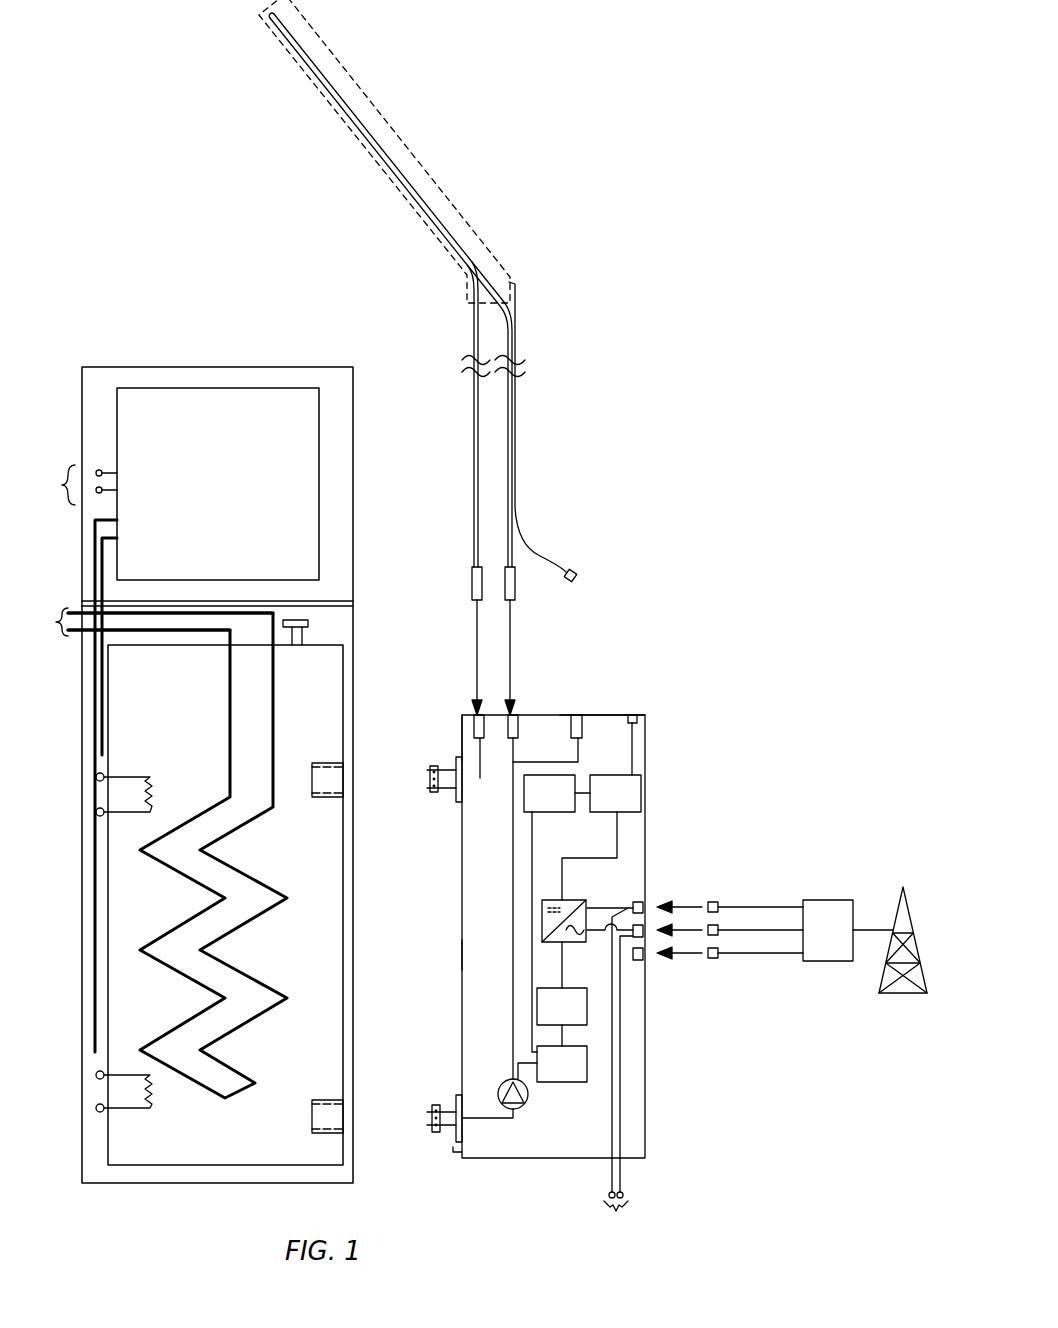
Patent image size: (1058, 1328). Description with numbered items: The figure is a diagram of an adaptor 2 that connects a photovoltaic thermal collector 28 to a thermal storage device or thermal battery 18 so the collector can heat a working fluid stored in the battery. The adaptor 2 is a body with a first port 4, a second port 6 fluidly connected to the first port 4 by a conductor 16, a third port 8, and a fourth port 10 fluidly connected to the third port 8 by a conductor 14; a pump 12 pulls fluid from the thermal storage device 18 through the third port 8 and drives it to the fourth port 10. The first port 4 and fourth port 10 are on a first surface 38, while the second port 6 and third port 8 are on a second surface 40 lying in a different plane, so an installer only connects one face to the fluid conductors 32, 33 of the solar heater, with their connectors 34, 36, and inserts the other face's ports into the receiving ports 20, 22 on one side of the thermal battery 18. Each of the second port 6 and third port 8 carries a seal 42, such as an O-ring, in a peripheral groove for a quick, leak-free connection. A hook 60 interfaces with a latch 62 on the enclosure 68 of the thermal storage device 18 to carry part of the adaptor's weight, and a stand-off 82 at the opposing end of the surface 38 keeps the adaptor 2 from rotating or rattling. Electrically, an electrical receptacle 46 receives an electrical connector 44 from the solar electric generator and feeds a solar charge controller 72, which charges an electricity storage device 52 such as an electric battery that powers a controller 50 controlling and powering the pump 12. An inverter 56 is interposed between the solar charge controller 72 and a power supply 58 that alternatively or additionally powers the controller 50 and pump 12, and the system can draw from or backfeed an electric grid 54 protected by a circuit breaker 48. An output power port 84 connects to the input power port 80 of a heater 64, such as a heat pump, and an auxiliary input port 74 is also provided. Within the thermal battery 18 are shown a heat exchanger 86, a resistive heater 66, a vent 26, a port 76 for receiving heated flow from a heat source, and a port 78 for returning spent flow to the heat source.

The adaptor 2 is at (645, 1120).
The first port 4 is at (468, 669).
The second port 6 is at (427, 780).
The third port 8 is at (427, 1118).
The fourth port 10 is at (515, 714).
The pump 12 is at (528, 1094).
The conductor 14 is at (508, 988).
The conductor 16 is at (473, 780).
The thermal storage device 18 is at (107, 933).
The port 20 is at (330, 1100).
The port 22 is at (330, 763).
The vent 26 is at (308, 621).
The photovoltaic thermal collector 28 is at (327, 46).
The conductor 32 is at (511, 418).
The conductor 33 is at (475, 418).
The connector 34 is at (514, 580).
The connector 36 is at (473, 580).
The first surface 38 is at (462, 951).
The second surface 40 is at (643, 714).
The seal 42 is at (456, 762).
The electrical connector 44 is at (576, 578).
The electrical receptacle 46 is at (632, 715).
The circuit breaker 48 is at (775, 920).
The controller 50 is at (552, 1064).
The electricity storage device 52 is at (557, 913).
The electric grid 54 is at (912, 993).
The inverter 56 is at (575, 902).
The power supply 58 is at (562, 1017).
The hook 60 is at (462, 740).
The latch 62 is at (353, 742).
The heater 64 is at (218, 484).
The heater 66 is at (122, 813).
The enclosure 68 is at (82, 665).
The solar charge controller 72 is at (601, 837).
The auxiliary input port 74 is at (577, 715).
The port for receiving heated flow from heat source 76 is at (97, 766).
The port for allowing spent flow to heat source 78 is at (97, 1060).
The input power port to heater 80 is at (71, 485).
The stand-off 82 is at (455, 1155).
The output power port 84 is at (616, 1079).
The heat exchanger 86 is at (146, 623).